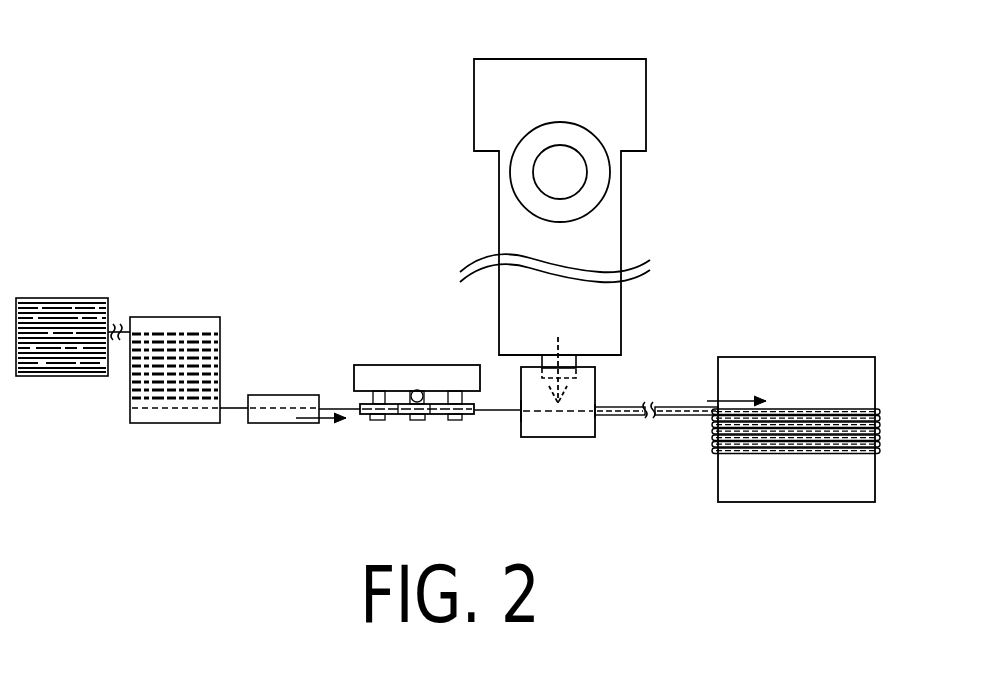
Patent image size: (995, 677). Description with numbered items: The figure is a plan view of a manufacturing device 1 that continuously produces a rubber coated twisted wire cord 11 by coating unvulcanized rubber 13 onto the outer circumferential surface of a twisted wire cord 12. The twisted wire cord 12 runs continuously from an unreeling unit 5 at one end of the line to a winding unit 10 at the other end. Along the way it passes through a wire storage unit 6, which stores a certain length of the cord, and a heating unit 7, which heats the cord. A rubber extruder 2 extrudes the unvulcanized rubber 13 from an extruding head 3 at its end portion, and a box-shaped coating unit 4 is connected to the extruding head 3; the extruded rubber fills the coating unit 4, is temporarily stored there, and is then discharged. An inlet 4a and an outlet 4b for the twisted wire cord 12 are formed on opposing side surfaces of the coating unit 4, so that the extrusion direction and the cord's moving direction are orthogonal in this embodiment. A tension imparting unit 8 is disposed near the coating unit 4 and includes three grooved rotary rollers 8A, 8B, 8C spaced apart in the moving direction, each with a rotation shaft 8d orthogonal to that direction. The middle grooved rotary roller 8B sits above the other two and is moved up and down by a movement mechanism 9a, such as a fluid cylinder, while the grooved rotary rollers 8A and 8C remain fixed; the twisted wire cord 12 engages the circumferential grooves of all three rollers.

The manufacturing device 1 is at (320, 138).
The rubber extruder 2 is at (622, 232).
The extruding head 3 is at (566, 368).
The coating unit 4 is at (584, 432).
The inlet 4a is at (518, 432).
The outlet 4b is at (605, 410).
The unreeling unit 5 is at (70, 297).
The wire storage unit 6 is at (182, 318).
The heating unit 7 is at (270, 395).
The tension imparting unit 8 is at (392, 387).
The grooved rotary roller 8A is at (380, 420).
The grooved rotary roller 8B is at (412, 420).
The grooved rotary roller 8C is at (455, 420).
The rotation shaft 8d is at (372, 399).
The movement mechanism 9a is at (417, 390).
The winding unit 10 is at (800, 358).
The rubber coated twisted wire cord 11 is at (685, 407).
The twisted wire cord 12 is at (236, 412).
The unvulcanized rubber 13 is at (675, 452).